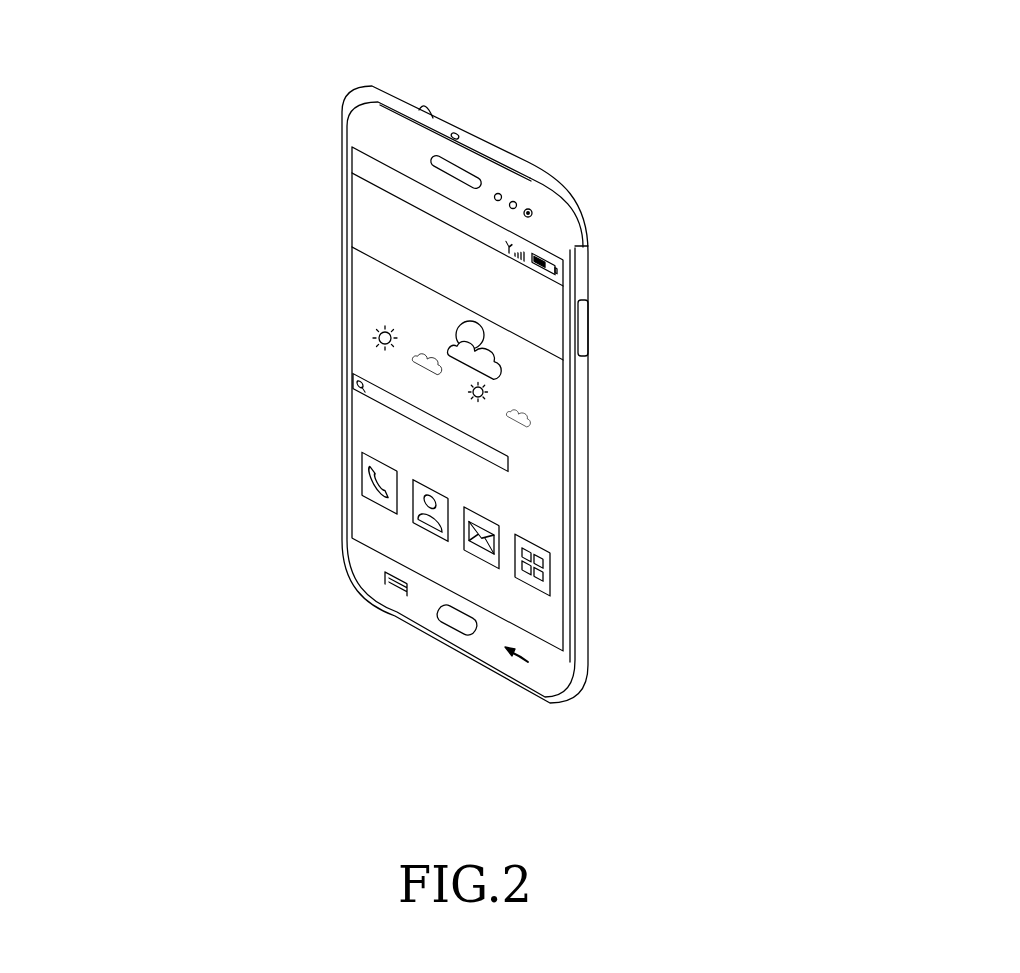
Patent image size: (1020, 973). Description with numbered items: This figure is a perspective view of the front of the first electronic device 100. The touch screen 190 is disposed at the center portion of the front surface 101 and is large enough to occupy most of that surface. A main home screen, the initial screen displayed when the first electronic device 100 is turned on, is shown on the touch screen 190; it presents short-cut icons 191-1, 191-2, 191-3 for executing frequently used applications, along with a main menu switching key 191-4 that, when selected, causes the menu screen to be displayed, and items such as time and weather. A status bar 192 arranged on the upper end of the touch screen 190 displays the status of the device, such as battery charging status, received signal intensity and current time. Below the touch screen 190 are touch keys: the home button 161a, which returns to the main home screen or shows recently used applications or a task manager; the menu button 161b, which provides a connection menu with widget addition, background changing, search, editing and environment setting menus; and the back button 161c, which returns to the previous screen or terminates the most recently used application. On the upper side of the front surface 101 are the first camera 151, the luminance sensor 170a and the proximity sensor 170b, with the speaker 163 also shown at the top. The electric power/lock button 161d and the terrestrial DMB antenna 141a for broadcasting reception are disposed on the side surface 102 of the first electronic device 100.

The first electronic device 100 is at (311, 56).
The front surface 101 is at (357, 128).
The side surface 102 is at (580, 438).
The terrestrial DMB antenna 141a is at (570, 203).
The first camera 151 is at (528, 205).
The home button 161a is at (460, 621).
The menu button 161b is at (387, 576).
The back button 161c is at (517, 661).
The electric power/lock button 161d is at (590, 332).
The speaker 163 is at (433, 158).
The luminance sensor 170a is at (498, 193).
The proximity sensor 170b is at (513, 201).
The touch screen 190 is at (363, 350).
The short-cut icon 191-1 is at (381, 468).
The short-cut icon 191-2 is at (430, 492).
The short-cut icon 191-3 is at (490, 520).
The main menu switching key 191-4 is at (533, 550).
The status bar 192 is at (360, 167).